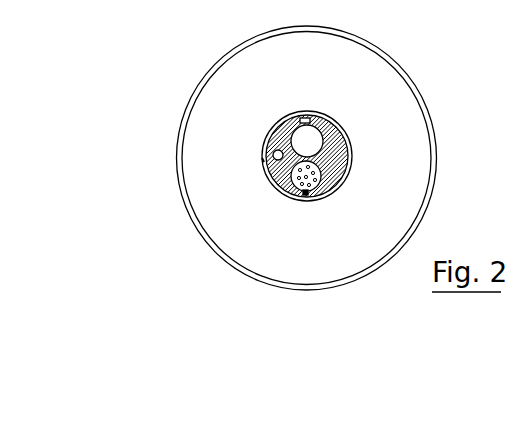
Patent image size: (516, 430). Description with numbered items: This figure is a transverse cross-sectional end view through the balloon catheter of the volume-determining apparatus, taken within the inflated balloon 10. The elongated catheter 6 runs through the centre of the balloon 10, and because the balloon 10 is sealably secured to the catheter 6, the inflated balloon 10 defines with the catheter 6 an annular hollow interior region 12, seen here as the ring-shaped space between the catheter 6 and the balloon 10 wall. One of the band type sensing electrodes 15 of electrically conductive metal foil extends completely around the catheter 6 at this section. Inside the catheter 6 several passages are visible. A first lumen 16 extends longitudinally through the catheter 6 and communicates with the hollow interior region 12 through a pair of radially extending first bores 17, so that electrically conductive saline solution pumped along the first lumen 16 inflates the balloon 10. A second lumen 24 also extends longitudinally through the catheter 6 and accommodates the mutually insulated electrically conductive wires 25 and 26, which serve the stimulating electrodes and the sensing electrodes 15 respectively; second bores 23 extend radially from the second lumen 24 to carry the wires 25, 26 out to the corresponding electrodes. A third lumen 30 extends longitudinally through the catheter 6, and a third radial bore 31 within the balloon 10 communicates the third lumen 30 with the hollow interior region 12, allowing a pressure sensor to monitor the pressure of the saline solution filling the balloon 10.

The inflatable balloon 10 is at (353, 35).
The annular hollow interior region 12 is at (252, 80).
The elongated catheter 6 is at (336, 157).
The sensing electrodes 15 is at (264, 159).
The first lumen 16 is at (322, 131).
The first bores 17 is at (308, 141).
The second bores 23 is at (304, 193).
The second lumen 24 is at (288, 180).
The wires 25 is at (313, 195).
The wires 26 is at (323, 170).
The third lumen 30 is at (272, 182).
The third radial bore 31 is at (273, 153).